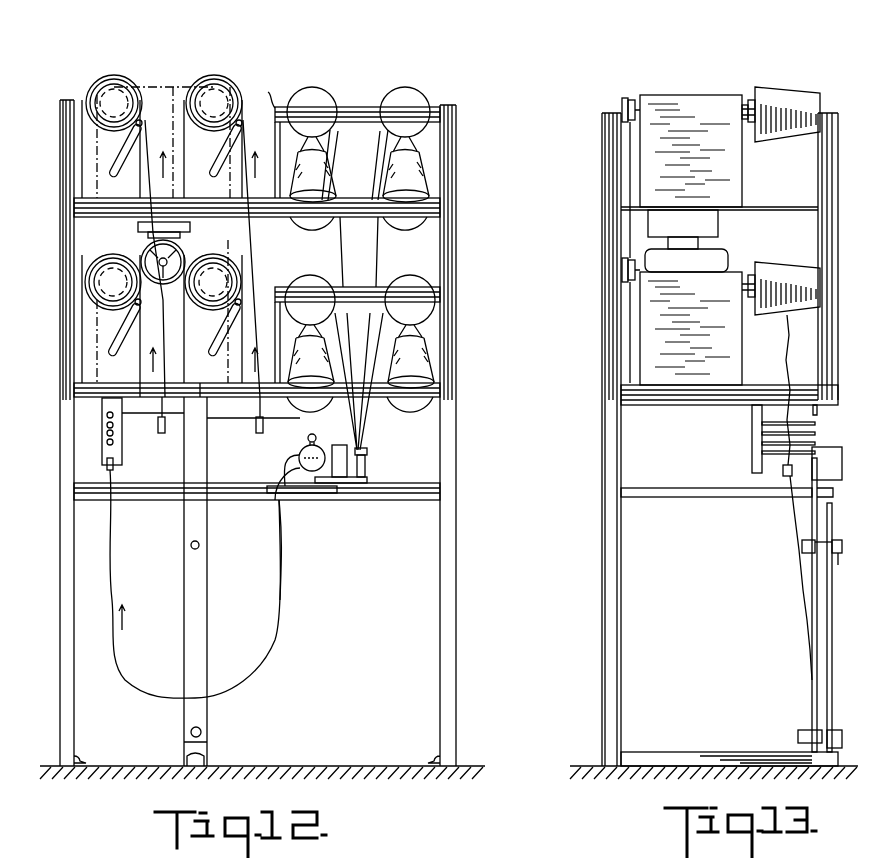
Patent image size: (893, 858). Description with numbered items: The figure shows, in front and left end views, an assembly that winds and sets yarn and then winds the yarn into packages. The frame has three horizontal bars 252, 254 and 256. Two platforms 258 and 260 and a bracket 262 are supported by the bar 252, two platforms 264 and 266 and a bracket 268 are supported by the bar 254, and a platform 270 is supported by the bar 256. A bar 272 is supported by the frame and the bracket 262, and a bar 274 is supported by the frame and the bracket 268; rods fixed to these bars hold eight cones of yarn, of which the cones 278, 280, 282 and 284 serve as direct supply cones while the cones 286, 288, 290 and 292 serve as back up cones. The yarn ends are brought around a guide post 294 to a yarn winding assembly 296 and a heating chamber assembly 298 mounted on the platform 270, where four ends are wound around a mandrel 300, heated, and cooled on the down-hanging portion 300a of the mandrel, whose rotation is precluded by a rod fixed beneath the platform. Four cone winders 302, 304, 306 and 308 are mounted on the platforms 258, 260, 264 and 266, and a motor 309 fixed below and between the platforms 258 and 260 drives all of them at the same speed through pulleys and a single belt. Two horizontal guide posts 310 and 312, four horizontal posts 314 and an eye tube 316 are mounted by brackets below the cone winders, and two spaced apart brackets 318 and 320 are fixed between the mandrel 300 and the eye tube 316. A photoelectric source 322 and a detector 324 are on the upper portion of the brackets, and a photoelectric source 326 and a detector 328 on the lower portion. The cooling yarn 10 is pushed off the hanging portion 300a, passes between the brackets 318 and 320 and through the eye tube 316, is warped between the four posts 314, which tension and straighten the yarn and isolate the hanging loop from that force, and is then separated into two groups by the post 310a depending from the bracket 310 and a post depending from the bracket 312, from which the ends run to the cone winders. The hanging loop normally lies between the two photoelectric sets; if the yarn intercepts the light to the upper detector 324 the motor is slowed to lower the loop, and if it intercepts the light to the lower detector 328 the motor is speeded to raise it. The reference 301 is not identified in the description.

In FIG. 12, the cooling yarn 10 is at (256, 685).
In FIG. 12, the horizontal bar 252 is at (443, 211).
In FIG. 12, the horizontal bar 254 is at (443, 392).
In FIG. 12, the horizontal bar 256 is at (443, 491).
In FIG. 12, the platform 258 is at (92, 196).
In FIG. 13, the platform 258 is at (778, 207).
In FIG. 12, the platform 260 is at (190, 198).
In FIG. 12, the bracket 262 is at (270, 106).
In FIG. 12, the platform 264 is at (175, 500).
In FIG. 12, the platform 266 is at (262, 436).
In FIG. 12, the bracket 268 is at (347, 270).
In FIG. 13, the platform 270 is at (675, 490).
In FIG. 12, the bar 272 is at (356, 107).
In FIG. 12, the bar 274 is at (425, 296).
In FIG. 12, the cone 278 is at (320, 88).
In FIG. 12, the cone 280 is at (410, 88).
In FIG. 12, the cone 282 is at (366, 296).
In FIG. 12, the cone 284 is at (430, 290).
In FIG. 12, the cone 286 is at (328, 176).
In FIG. 12, the cone 288 is at (430, 176).
In FIG. 12, the cone 290 is at (322, 410).
In FIG. 12, the cone 292 is at (432, 365).
In FIG. 12, the guide post 294 is at (368, 460).
In FIG. 12, the yarn winding assembly 296 is at (345, 478).
In FIG. 12, the heating chamber assembly 298 is at (318, 472).
In FIG. 12, the mandrel 300 is at (280, 505).
In FIG. 12, the down-hanging portion of the mandrel 300a is at (290, 506).
In FIG. 12, the web run 301 is at (282, 548).
In FIG. 12, the cone winder 302 is at (116, 82).
In FIG. 12, the cone winder 304 is at (216, 82).
In FIG. 12, the cone winder 306 is at (113, 300).
In FIG. 12, the cone winder 308 is at (330, 284).
In FIG. 12, the motor 309 is at (178, 257).
In FIG. 12, the horizontal guide post 310 is at (215, 425).
In FIG. 12, the post 310a is at (170, 581).
In FIG. 12, the horizontal guide post 312 is at (283, 462).
In FIG. 12, the horizontal posts 314 is at (107, 442).
In FIG. 13, the horizontal posts 314 is at (760, 452).
In FIG. 12, the eye tube 316 is at (107, 470).
In FIG. 13, the eye tube 316 is at (784, 477).
In FIG. 13, the bracket 318 is at (810, 627).
In FIG. 13, the bracket 320 is at (826, 648).
In FIG. 13, the photoelectric source 322 is at (800, 549).
In FIG. 13, the detector 324 is at (840, 553).
In FIG. 13, the photoelectric source 326 is at (797, 736).
In FIG. 13, the detector 328 is at (825, 748).